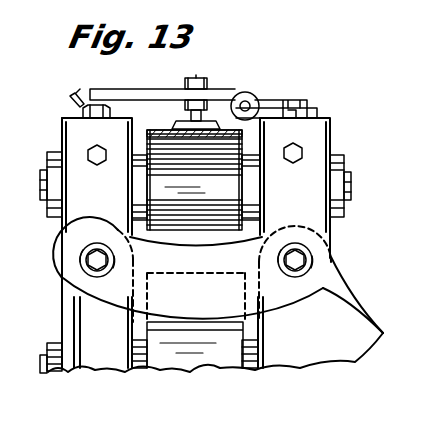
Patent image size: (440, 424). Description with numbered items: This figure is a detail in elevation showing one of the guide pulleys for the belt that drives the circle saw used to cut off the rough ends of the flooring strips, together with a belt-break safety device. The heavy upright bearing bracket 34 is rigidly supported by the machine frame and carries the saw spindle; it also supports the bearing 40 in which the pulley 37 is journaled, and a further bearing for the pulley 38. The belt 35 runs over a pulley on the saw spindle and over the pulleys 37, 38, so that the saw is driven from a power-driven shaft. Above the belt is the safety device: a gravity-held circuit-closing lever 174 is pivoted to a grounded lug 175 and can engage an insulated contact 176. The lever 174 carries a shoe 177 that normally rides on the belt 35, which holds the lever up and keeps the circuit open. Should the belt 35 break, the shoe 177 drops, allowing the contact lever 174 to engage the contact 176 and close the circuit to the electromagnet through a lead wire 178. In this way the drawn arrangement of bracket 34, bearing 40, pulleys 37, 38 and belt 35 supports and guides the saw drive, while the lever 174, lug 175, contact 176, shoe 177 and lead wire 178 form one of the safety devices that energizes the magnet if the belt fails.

The bearing bracket 34 is at (312, 343).
The belt 35 is at (165, 131).
The pulley 37 is at (228, 200).
The pulley 38 is at (213, 358).
The bearing 40 is at (316, 150).
The circuit-closing lever 174 is at (217, 94).
The grounded lug 175 is at (267, 111).
The insulated contact 176 is at (95, 106).
The shoe 177 is at (178, 125).
The lead wire 178 is at (69, 101).